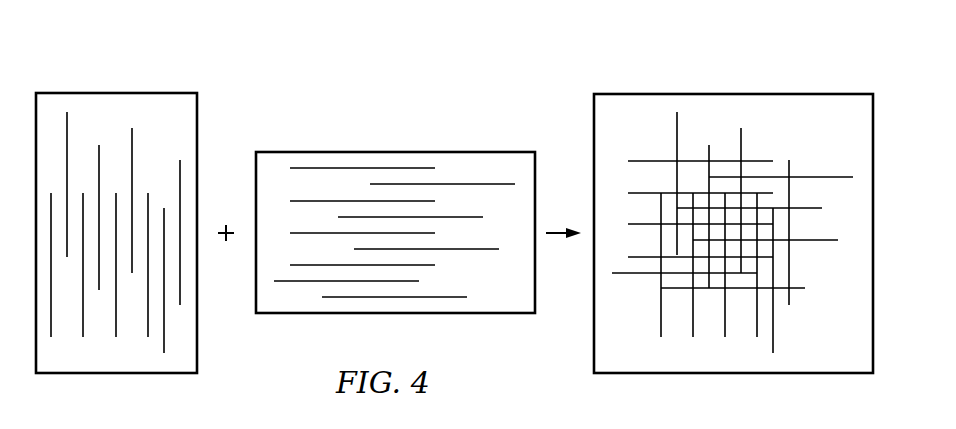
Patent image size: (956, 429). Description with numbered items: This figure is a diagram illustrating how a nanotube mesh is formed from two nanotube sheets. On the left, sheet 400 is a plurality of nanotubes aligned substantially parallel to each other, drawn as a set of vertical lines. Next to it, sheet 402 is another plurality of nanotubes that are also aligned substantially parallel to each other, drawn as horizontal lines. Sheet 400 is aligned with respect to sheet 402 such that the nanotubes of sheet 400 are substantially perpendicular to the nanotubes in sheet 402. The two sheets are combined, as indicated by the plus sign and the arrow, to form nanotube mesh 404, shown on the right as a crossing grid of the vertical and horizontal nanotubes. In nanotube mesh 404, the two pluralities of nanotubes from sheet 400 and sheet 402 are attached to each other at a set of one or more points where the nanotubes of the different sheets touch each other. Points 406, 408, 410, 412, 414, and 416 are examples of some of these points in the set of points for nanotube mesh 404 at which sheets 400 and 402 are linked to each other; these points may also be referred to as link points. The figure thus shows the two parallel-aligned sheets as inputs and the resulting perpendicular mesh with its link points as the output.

The sheet 400 is at (117, 93).
The sheet 402 is at (395, 152).
The nanotube mesh 404 is at (757, 85).
The point 406 is at (790, 177).
The point 408 is at (757, 258).
The point 410 is at (725, 290).
The point 412 is at (742, 160).
The point 414 is at (789, 288).
The point 416 is at (661, 273).